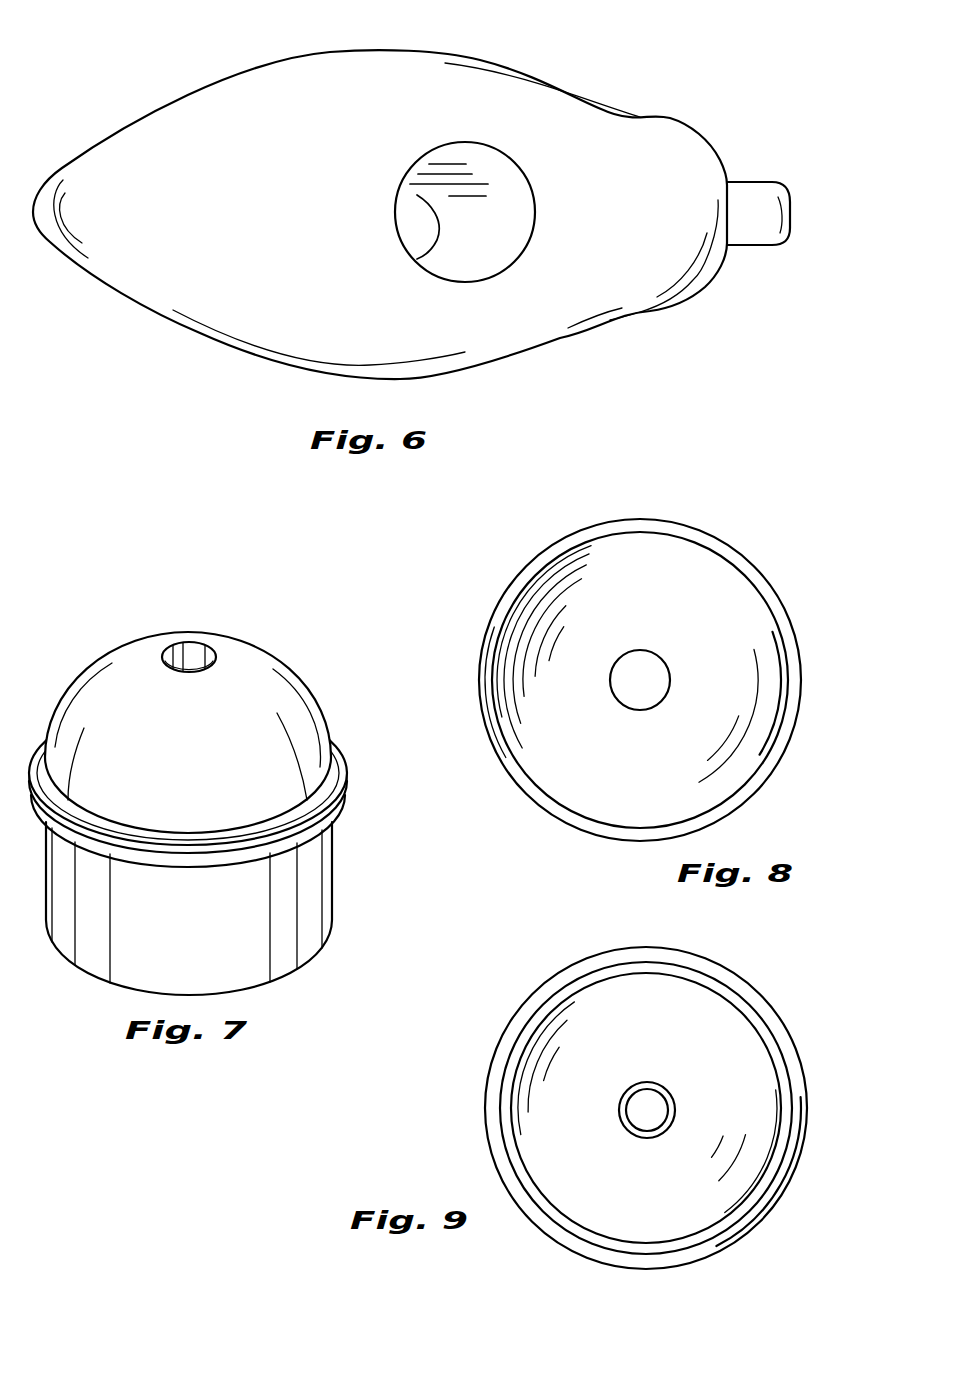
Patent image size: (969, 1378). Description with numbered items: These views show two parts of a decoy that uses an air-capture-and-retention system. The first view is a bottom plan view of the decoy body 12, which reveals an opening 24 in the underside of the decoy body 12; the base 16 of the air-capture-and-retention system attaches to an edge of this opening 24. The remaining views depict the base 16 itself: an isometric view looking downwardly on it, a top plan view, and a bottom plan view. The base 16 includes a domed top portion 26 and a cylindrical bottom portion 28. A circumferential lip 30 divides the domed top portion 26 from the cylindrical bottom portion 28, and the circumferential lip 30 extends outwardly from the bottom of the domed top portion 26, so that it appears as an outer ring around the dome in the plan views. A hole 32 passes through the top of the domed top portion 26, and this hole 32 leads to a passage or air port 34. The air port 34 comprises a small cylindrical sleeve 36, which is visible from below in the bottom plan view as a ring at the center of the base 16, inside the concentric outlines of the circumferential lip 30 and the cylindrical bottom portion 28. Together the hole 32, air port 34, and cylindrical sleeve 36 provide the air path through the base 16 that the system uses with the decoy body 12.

In FIG. 6, the decoy body 12 is at (600, 62).
In FIG. 6, the opening 24 is at (417, 195).
In FIG. 7, the base 16 is at (235, 788).
In FIG. 8, the base 16 is at (654, 618).
In FIG. 9, the base 16 is at (591, 1110).
In FIG. 7, the domed top portion 26 is at (108, 703).
In FIG. 8, the domed top portion 26 is at (702, 575).
In FIG. 7, the cylindrical bottom portion 28 is at (103, 920).
In FIG. 9, the cylindrical bottom portion 28 is at (773, 1057).
In FIG. 7, the circumferential lip 30 is at (348, 778).
In FIG. 8, the circumferential lip 30 is at (787, 600).
In FIG. 9, the circumferential lip 30 is at (520, 1193).
In FIG. 7, the hole 32 is at (165, 650).
In FIG. 8, the hole 32 is at (627, 650).
In FIG. 7, the air port 34 is at (205, 634).
In FIG. 9, the air port 34 is at (647, 1112).
In FIG. 9, the cylindrical sleeve 36 is at (619, 1100).